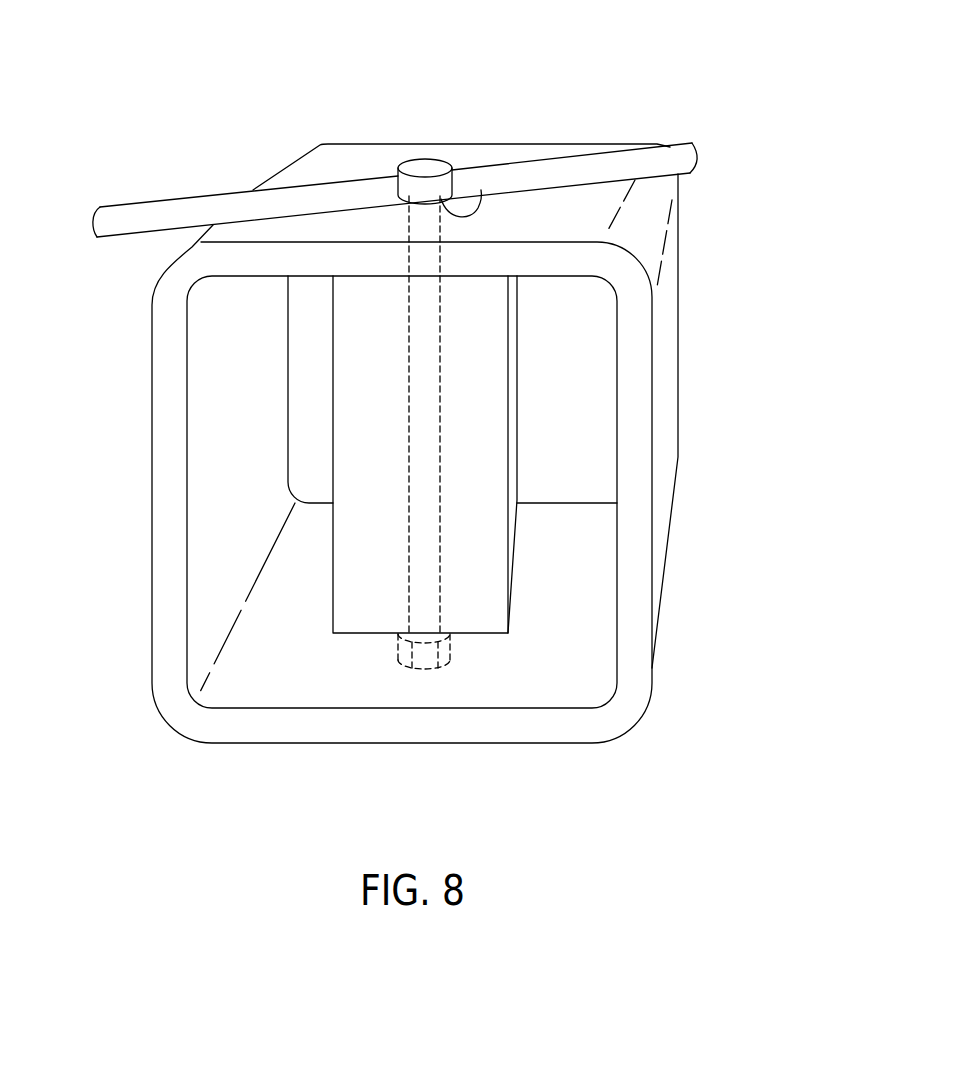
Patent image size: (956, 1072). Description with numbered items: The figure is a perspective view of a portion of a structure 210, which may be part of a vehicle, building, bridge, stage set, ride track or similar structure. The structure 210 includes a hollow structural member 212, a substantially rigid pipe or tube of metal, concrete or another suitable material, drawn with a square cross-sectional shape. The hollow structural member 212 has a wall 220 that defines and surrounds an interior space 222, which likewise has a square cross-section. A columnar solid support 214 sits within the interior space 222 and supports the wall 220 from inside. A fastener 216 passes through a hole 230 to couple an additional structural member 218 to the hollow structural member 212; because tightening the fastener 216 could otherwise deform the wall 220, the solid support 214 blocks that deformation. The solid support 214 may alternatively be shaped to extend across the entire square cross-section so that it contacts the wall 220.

The structure 210 is at (660, 63).
The hollow structural member 212 is at (717, 148).
The columnar solid support 214 is at (492, 397).
The fastener 216 is at (423, 167).
The additional structural member 218 is at (598, 165).
The wall 220 is at (153, 425).
The interior space 222 is at (203, 485).
The hole 230 is at (480, 190).